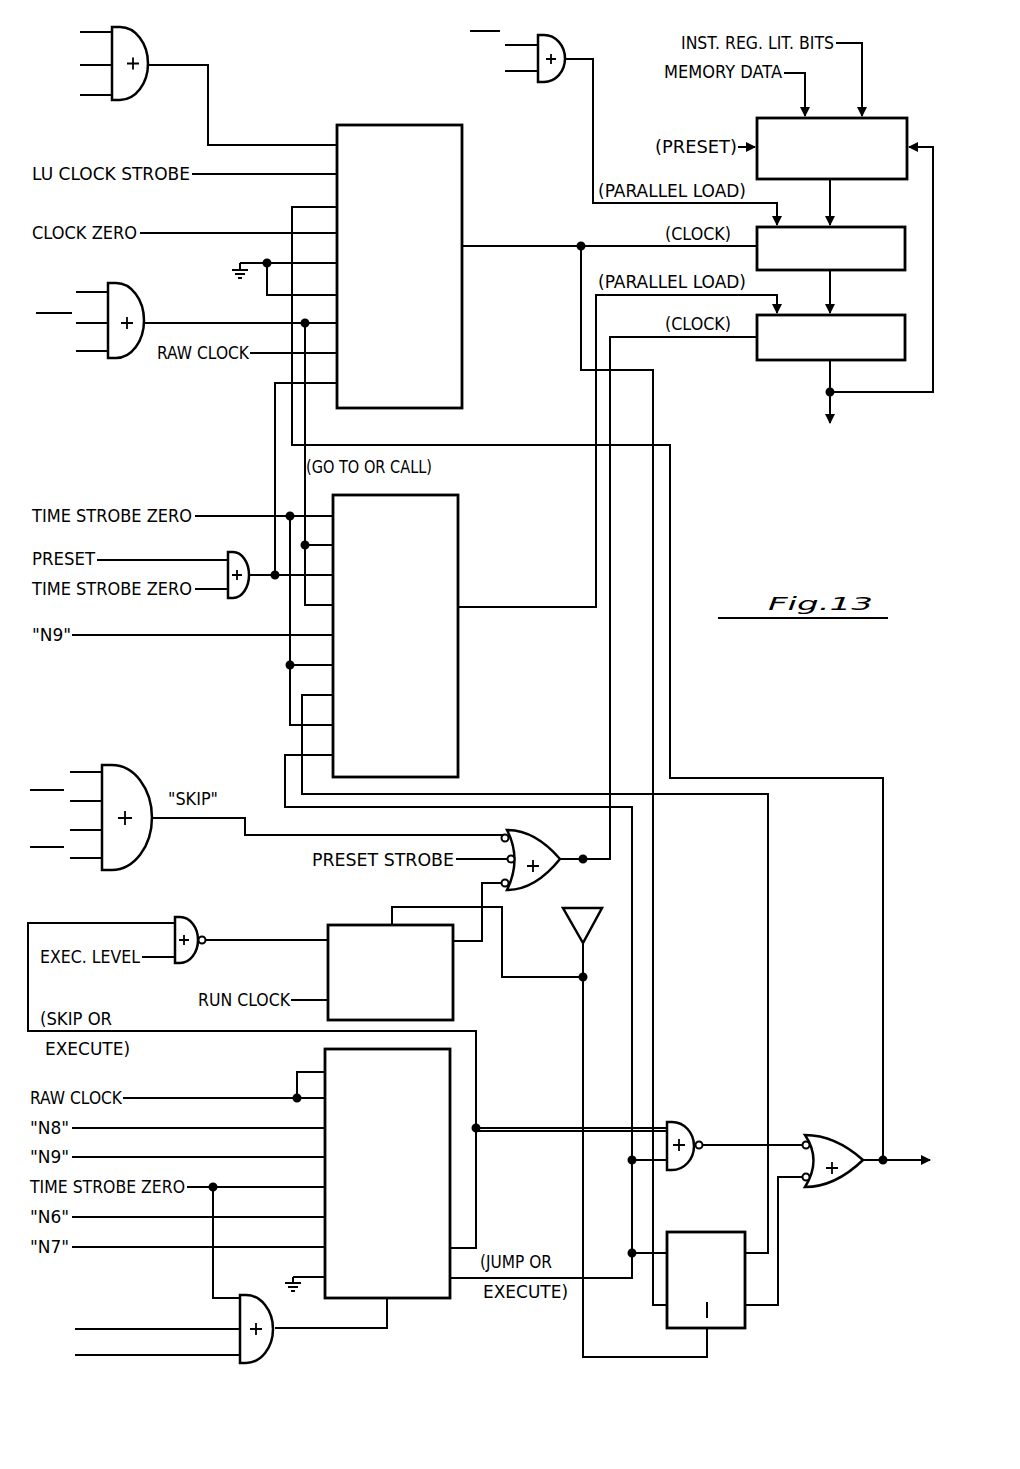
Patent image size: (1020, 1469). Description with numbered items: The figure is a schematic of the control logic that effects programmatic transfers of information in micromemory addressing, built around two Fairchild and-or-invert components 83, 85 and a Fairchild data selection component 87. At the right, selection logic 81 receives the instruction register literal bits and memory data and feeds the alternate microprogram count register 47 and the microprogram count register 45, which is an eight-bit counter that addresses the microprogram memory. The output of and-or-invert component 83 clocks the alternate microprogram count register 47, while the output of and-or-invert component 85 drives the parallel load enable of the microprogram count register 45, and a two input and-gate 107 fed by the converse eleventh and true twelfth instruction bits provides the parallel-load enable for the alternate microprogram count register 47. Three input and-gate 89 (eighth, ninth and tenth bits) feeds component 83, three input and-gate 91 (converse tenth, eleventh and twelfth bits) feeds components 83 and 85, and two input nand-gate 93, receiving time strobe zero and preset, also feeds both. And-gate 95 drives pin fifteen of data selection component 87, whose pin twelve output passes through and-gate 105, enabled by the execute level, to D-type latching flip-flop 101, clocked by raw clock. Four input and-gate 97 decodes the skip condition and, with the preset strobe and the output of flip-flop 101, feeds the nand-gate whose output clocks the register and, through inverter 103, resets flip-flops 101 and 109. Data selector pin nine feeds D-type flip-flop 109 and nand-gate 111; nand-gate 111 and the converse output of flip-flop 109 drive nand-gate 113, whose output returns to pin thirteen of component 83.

The microprogram count register 45 is at (778, 352).
The alternate microprogram count register 47 is at (896, 264).
The selection logic 81 is at (892, 118).
The and-or-invert component 83 is at (455, 338).
The and-or-invert component 85 is at (458, 556).
The data selection component 87 is at (418, 1292).
The three input and-gate 89 is at (140, 84).
The three input and-gate 91 is at (124, 358).
The two input nand-gate 93 is at (243, 558).
The and-gate 95 is at (246, 1296).
The four input and-gate 97 is at (126, 780).
The D-type latching flip-flop 101 is at (352, 925).
The inverter 103 is at (590, 914).
The and-gate 105 is at (178, 963).
The two input and-gate 107 is at (548, 82).
The D-type flip-flop 109 is at (737, 1328).
The nand-gate 111 is at (678, 1170).
The nand-gate 113 is at (823, 1135).